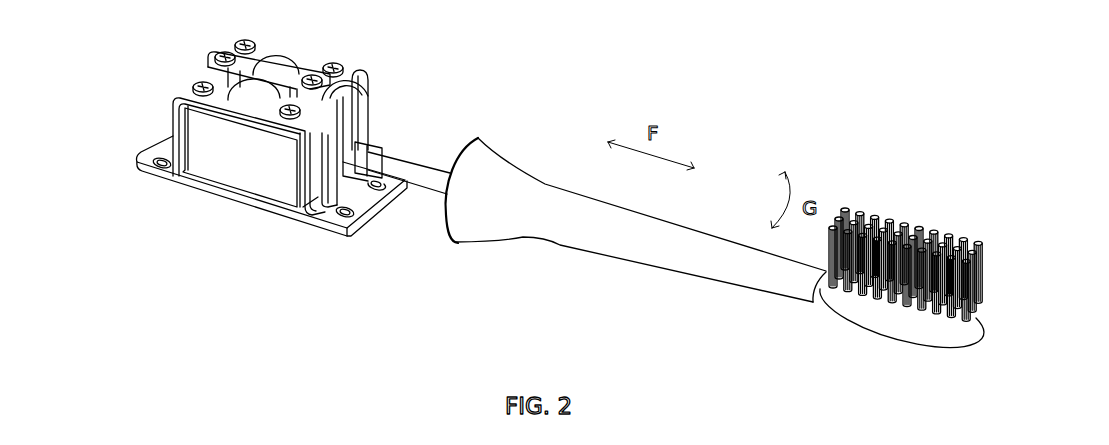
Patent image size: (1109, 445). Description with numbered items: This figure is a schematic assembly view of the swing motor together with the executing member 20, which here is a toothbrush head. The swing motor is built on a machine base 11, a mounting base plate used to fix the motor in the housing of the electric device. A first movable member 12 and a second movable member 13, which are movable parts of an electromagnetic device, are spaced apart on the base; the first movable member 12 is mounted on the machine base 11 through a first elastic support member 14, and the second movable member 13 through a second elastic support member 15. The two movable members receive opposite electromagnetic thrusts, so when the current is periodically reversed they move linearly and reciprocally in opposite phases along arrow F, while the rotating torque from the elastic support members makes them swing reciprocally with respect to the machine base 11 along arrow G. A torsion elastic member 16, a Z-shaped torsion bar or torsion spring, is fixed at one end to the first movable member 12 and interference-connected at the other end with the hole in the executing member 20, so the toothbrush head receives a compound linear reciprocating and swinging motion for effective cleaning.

The machine base 11 is at (268, 210).
The first movable member 12 is at (222, 77).
The second movable member 13 is at (248, 153).
The first elastic support member 14 is at (363, 97).
The second elastic support member 15 is at (172, 124).
The torsion elastic member 16 is at (395, 168).
The executing member 20 is at (499, 175).